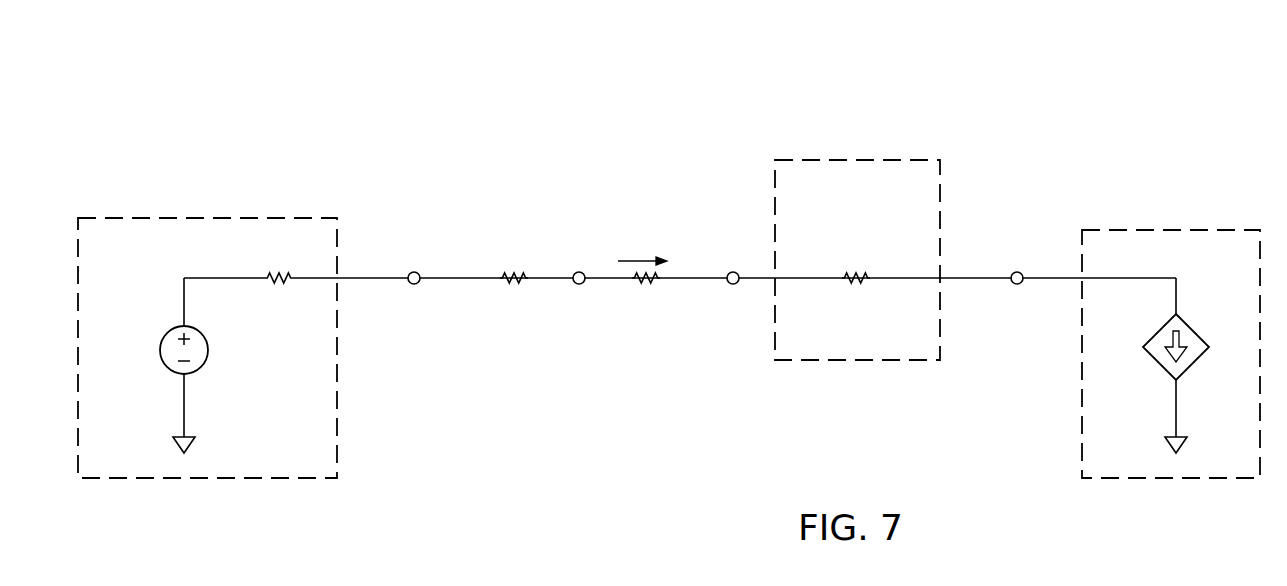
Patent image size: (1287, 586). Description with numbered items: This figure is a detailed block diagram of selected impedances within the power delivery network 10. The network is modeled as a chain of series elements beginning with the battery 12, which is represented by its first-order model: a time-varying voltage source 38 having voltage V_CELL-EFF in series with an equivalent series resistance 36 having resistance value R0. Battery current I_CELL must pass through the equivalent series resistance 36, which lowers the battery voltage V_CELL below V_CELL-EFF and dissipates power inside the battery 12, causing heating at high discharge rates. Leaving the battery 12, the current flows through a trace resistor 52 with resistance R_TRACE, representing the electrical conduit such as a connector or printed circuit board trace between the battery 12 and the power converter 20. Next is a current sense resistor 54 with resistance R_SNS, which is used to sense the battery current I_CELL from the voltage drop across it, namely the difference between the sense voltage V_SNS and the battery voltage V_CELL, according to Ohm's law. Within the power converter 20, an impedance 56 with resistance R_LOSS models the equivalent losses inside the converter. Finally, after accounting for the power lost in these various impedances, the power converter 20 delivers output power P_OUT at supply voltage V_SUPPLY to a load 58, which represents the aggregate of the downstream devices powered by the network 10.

The power delivery network 10 is at (292, 80).
The battery 12 is at (207, 313).
The power converter 20 is at (858, 224).
The equivalent series resistance 36 is at (276, 284).
The time-varying voltage source 38 is at (160, 350).
The trace resistor 52 is at (512, 284).
The current sense resistor 54 is at (642, 284).
The impedance 56 is at (855, 284).
The load 58 is at (1210, 216).